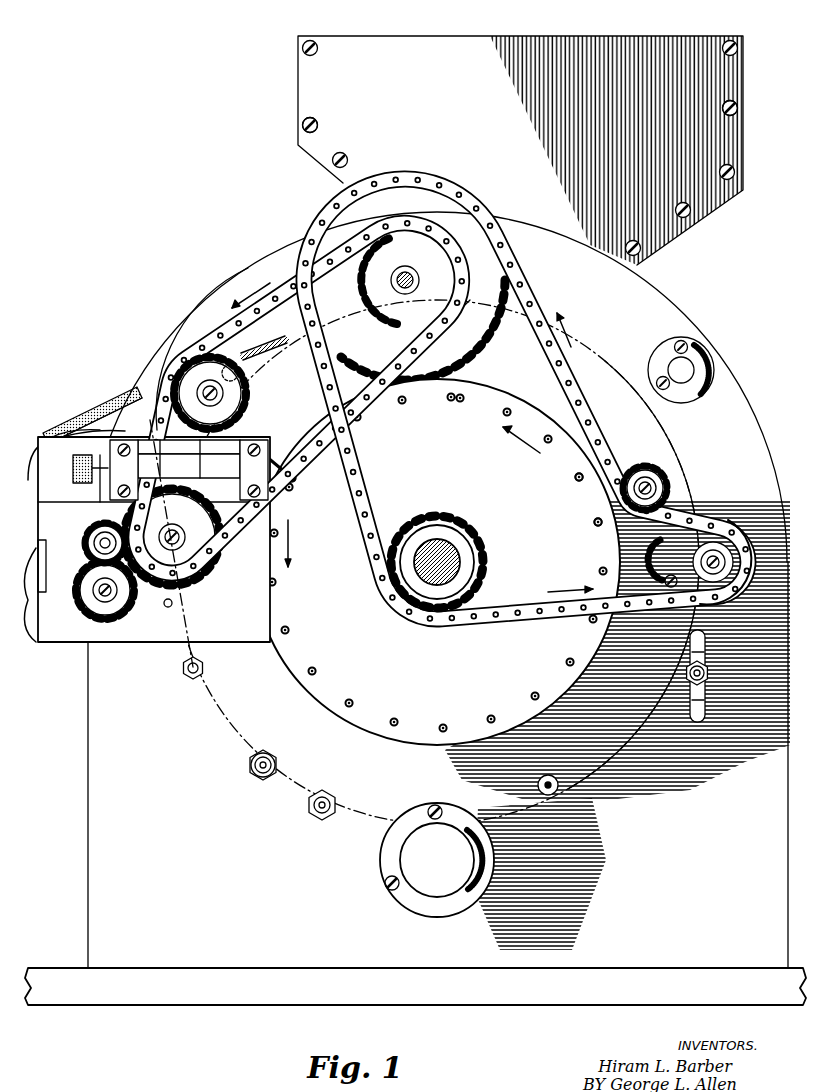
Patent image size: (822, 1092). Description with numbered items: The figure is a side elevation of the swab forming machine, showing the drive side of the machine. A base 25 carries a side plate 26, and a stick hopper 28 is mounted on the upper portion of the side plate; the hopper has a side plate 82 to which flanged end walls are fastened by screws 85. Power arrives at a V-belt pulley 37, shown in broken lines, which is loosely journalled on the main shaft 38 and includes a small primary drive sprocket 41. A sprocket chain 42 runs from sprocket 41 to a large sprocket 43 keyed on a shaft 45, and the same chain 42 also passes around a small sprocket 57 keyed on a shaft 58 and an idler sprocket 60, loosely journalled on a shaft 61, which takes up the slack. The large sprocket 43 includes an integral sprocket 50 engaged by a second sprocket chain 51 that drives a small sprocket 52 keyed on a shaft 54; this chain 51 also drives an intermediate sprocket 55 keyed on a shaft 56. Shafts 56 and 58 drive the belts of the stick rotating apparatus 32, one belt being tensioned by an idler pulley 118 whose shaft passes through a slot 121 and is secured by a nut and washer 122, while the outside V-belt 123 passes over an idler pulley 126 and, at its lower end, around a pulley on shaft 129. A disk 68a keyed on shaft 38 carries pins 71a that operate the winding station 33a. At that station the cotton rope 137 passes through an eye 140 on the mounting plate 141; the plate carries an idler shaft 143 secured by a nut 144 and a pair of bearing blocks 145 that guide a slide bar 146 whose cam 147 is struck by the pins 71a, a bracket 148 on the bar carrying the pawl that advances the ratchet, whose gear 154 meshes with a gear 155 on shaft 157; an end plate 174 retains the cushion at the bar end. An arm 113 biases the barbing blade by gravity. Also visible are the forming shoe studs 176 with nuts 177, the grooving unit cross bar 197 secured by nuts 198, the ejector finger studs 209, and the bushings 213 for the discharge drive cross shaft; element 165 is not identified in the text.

The base 25 is at (76, 966).
The side plate 26 is at (88, 784).
The stick hopper 28 is at (623, 56).
The stick rotating apparatus 32 is at (112, 390).
The winding station 33a is at (48, 438).
The V-belt pulley 37 is at (240, 736).
The shaft 38 is at (440, 556).
The primary drive sprocket 41 is at (488, 554).
The sprocket chain 42 is at (532, 297).
The large sprocket 43 is at (493, 346).
The shaft 45 is at (405, 267).
The integral sprocket 50 is at (372, 287).
The sprocket chain 51 is at (247, 330).
The small sprocket 52 is at (214, 575).
The shaft 54 is at (172, 530).
The intermediate sprocket 55 is at (170, 367).
The shaft 56 is at (207, 378).
The small sprocket 57 is at (751, 540).
The shaft 58 is at (714, 522).
The idler sprocket 60 is at (665, 478).
The shaft 61 is at (644, 488).
The disk 68a is at (368, 714).
The pins 71a is at (595, 518).
The side plate 82 is at (403, 52).
The screws 85 is at (302, 127).
The arm 113 is at (277, 358).
The idler pulley 118 is at (708, 652).
The slot 121 is at (708, 705).
The nut and washer 122 is at (706, 678).
The V-belt 123 is at (95, 410).
The idler pulley 126 is at (63, 425).
The shaft 129 is at (315, 813).
The cotton rope 137 is at (40, 612).
The eye 140 is at (40, 545).
The mounting plate 141 is at (72, 642).
The idler shaft 143 is at (95, 544).
The nut 144 is at (166, 606).
The bearing blocks 145 is at (125, 442).
The slide bar 146 is at (100, 490).
The skid or cam 147 is at (290, 472).
The bracket 148 is at (204, 469).
The gear 154 is at (122, 531).
The gear 155 is at (82, 580).
The shaft 157 is at (104, 602).
The bar 165 is at (189, 459).
The end plate 174 is at (73, 468).
The studs 176 is at (205, 670).
The nut 177 is at (190, 678).
The cross bar 197 is at (255, 776).
The nuts 198 is at (272, 756).
The studs 209 is at (550, 796).
The bushings 213 is at (410, 862).